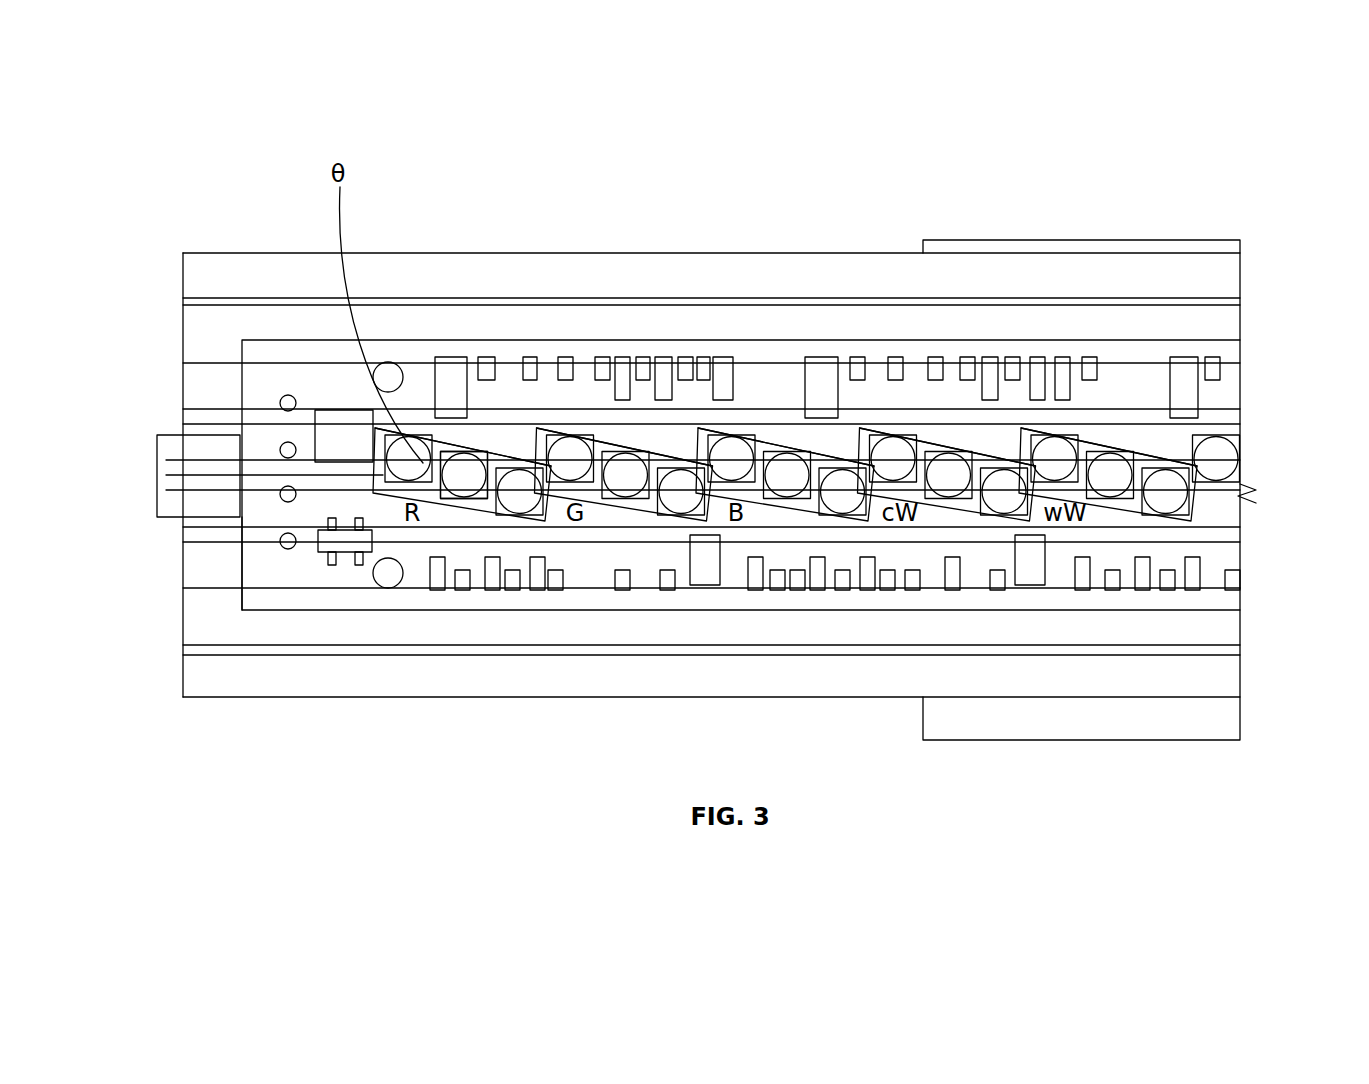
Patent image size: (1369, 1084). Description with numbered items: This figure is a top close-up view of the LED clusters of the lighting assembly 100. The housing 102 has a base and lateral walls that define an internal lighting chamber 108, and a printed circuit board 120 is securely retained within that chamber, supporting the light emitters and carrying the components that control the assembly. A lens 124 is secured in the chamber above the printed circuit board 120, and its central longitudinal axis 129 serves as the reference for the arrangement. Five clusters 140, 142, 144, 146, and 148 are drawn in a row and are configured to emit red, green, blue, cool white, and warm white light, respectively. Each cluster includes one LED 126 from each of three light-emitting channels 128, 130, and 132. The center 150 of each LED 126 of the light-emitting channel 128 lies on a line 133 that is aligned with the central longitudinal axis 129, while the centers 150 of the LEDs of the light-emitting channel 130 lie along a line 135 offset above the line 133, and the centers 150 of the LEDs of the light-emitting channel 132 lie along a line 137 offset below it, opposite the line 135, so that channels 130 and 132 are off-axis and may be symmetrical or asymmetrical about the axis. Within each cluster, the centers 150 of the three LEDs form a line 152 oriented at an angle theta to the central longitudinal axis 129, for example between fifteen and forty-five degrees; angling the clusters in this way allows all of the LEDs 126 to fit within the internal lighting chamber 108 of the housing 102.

The lighting assembly 100 is at (213, 152).
The housing 102 is at (243, 698).
The internal lighting chamber 108 is at (1152, 335).
The printed circuit board 120 is at (240, 347).
The lens 124 is at (247, 373).
The LED 126 is at (463, 477).
The light-emitting channel 128 is at (480, 468).
The central longitudinal axis 129 is at (183, 490).
The light-emitting channel 130 is at (403, 473).
The light-emitting channel 132 is at (521, 492).
The line 133 is at (190, 466).
The line 135 is at (183, 432).
The line 137 is at (240, 518).
The cluster 140 is at (460, 512).
The cluster 142 is at (640, 512).
The cluster 144 is at (805, 512).
The cluster 146 is at (962, 512).
The cluster 148 is at (1122, 512).
The center 150 is at (405, 490).
The line 152 is at (460, 488).